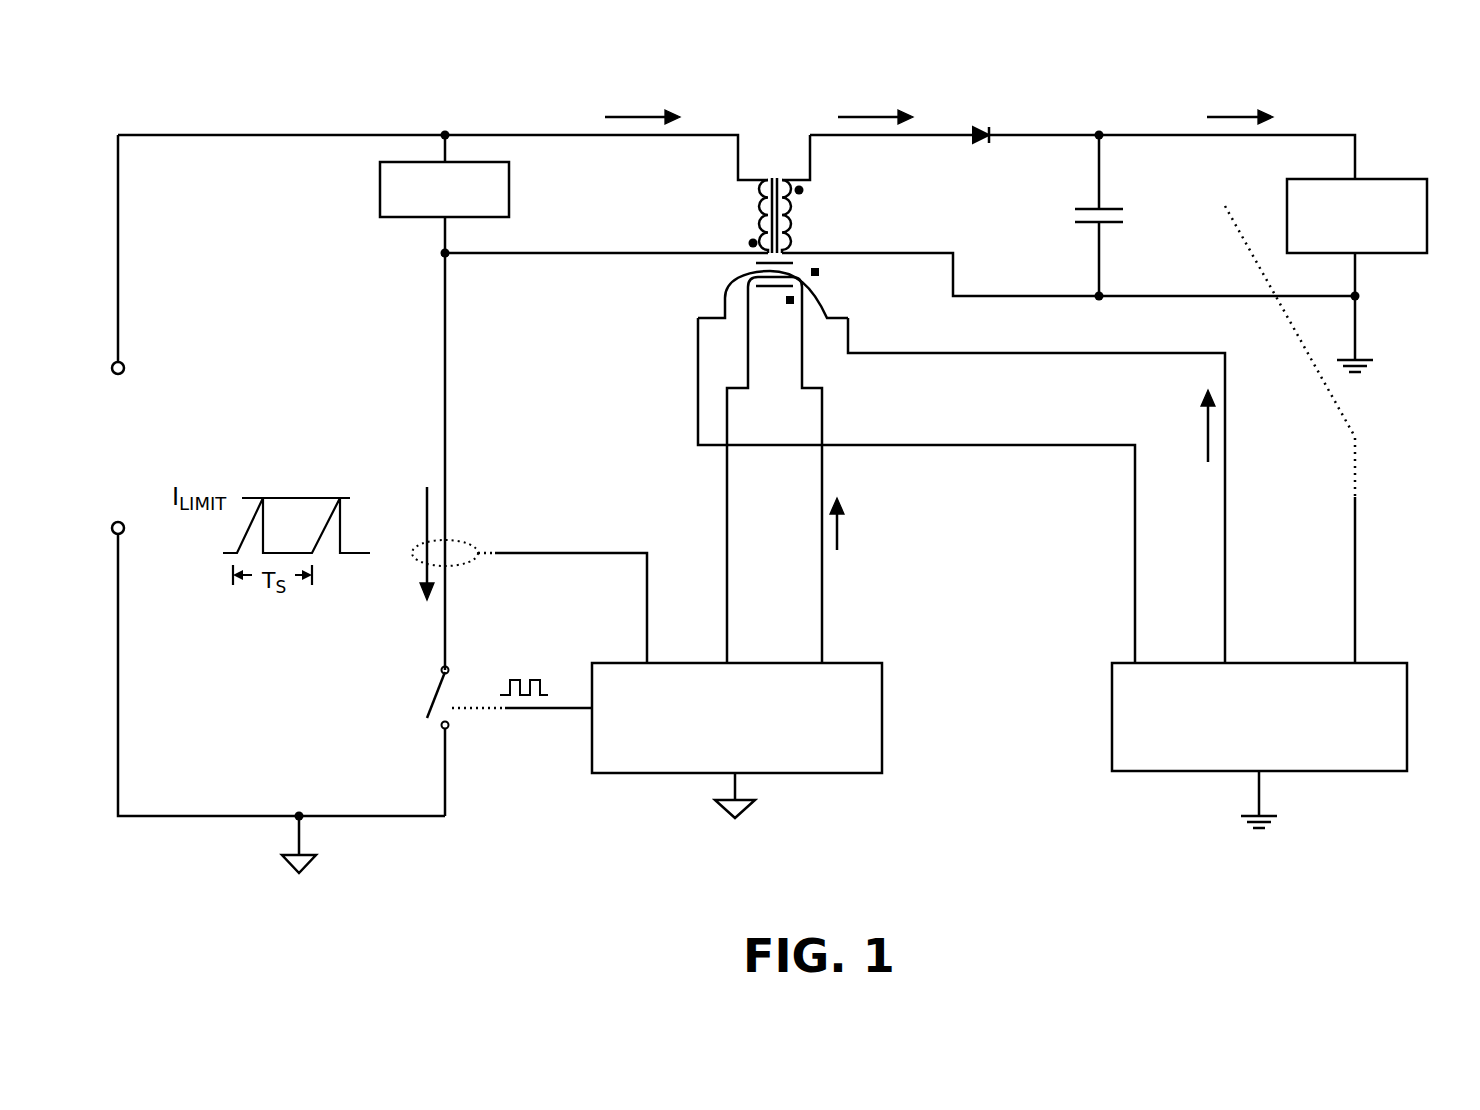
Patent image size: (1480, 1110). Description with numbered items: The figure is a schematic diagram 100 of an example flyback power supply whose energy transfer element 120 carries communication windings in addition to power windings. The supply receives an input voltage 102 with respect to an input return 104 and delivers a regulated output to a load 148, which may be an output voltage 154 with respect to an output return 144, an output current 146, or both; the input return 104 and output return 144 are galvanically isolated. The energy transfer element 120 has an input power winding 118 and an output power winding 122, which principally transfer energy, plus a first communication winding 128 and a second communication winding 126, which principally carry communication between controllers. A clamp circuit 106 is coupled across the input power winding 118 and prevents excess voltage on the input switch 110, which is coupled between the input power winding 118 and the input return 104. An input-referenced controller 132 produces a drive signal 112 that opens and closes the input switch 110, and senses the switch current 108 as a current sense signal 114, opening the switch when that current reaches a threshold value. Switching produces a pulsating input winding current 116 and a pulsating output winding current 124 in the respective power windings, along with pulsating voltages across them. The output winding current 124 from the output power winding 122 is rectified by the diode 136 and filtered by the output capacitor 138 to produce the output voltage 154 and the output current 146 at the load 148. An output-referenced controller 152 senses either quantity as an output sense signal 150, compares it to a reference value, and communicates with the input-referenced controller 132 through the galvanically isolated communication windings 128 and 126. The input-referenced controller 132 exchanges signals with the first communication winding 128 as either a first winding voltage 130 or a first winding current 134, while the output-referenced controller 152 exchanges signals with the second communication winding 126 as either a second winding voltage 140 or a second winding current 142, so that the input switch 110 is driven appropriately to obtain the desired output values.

The schematic diagram 100 is at (247, 103).
The input voltage VIN 102 is at (143, 450).
The input return 104 is at (292, 862).
The clamp circuit 106 is at (372, 190).
The current IS1 108 is at (420, 480).
The input switch S1 110 is at (432, 680).
The drive signal 112 is at (528, 672).
The current sense signal 114 is at (640, 595).
The current IP1 116 is at (617, 95).
The input power winding P1 118 is at (735, 200).
The energy transfer element L1 120 is at (778, 150).
The output power winding P2 122 is at (815, 202).
The current IP2 124 is at (907, 95).
The second communication winding K2 126 is at (858, 315).
The first communication winding K1 128 is at (810, 355).
The voltage VC1 130 is at (775, 590).
The input-referenced controller 132 is at (848, 647).
The current IC1 134 is at (850, 515).
The diode 136 is at (980, 117).
The output capacitor CO 138 is at (1062, 213).
The voltage VC2 140 is at (1188, 598).
The current IC2 142 is at (1192, 408).
The output return 144 is at (1355, 372).
The output current IO 146 is at (1262, 97).
The load 148 is at (1390, 170).
The output sense signal 150 is at (1347, 508).
The output-referenced controller 152 is at (1393, 652).
The output voltage VO 154 is at (1165, 195).